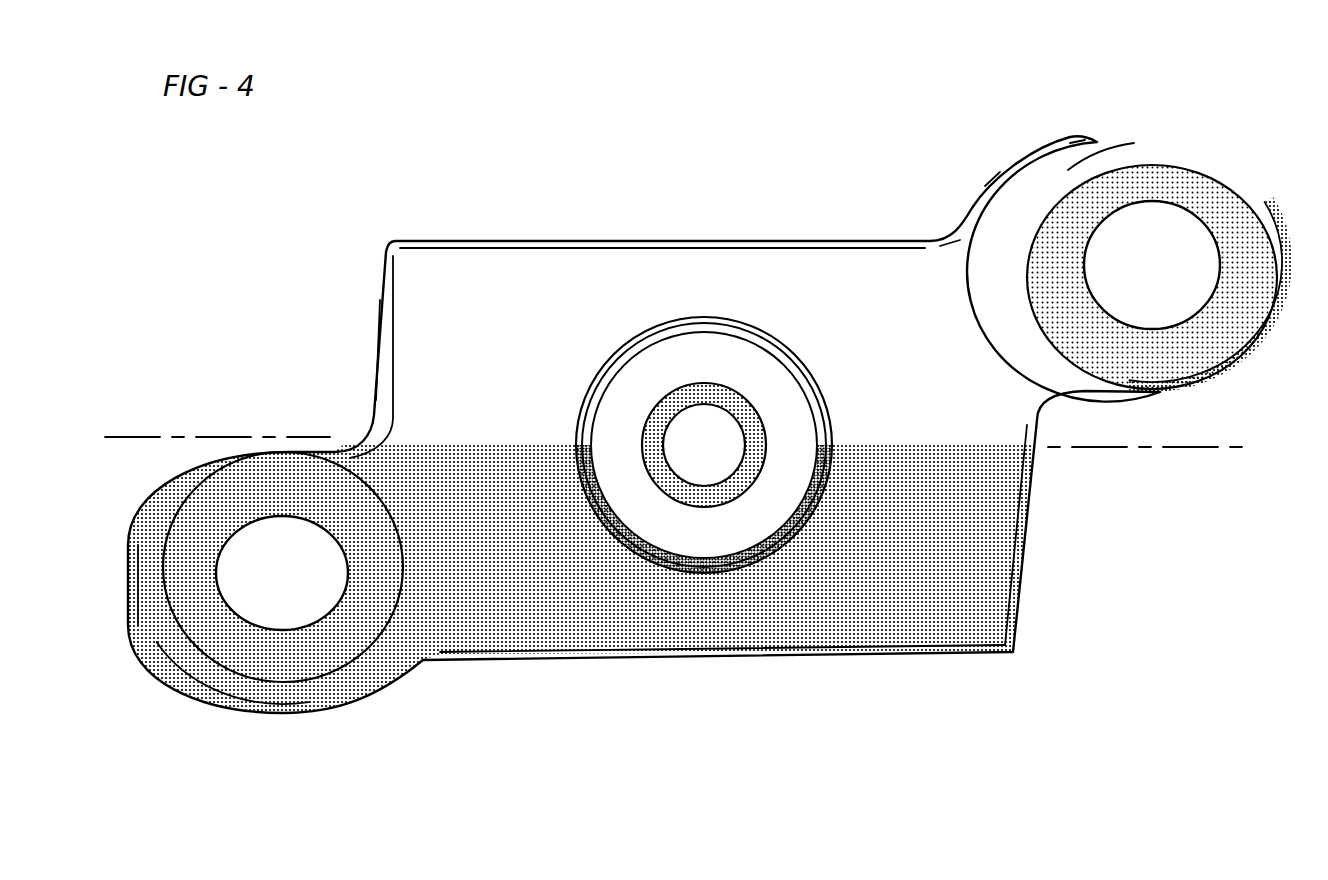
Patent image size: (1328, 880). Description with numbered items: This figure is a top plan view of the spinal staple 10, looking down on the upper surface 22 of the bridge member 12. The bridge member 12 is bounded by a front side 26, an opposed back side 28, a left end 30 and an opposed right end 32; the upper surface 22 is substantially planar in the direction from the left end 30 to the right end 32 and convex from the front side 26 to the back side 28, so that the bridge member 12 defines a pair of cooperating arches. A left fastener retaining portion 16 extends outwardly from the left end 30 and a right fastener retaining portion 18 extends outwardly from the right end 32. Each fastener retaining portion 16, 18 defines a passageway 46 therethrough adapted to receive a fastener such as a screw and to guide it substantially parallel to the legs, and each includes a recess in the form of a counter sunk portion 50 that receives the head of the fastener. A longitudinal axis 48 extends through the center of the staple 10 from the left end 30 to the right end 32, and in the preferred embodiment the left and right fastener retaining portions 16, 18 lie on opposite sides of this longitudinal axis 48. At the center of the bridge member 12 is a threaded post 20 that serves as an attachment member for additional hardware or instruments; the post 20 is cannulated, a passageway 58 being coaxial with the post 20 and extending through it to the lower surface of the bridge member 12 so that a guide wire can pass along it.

The spinal staple 10 is at (350, 229).
The bridge member 12 is at (455, 270).
The left fastener retaining portion 16 is at (385, 663).
The right fastener retaining portion 18 is at (1020, 180).
The threaded post 20 is at (665, 367).
The upper surface 22 is at (830, 272).
The front side 26 is at (805, 666).
The back side 28 is at (688, 236).
The left end 30 is at (366, 378).
The right end 32 is at (1044, 546).
The passageway 46 is at (1163, 240).
The longitudinal axis 48 is at (1150, 450).
The counter sunk portion 50 is at (1220, 200).
The passageway 58 is at (712, 430).